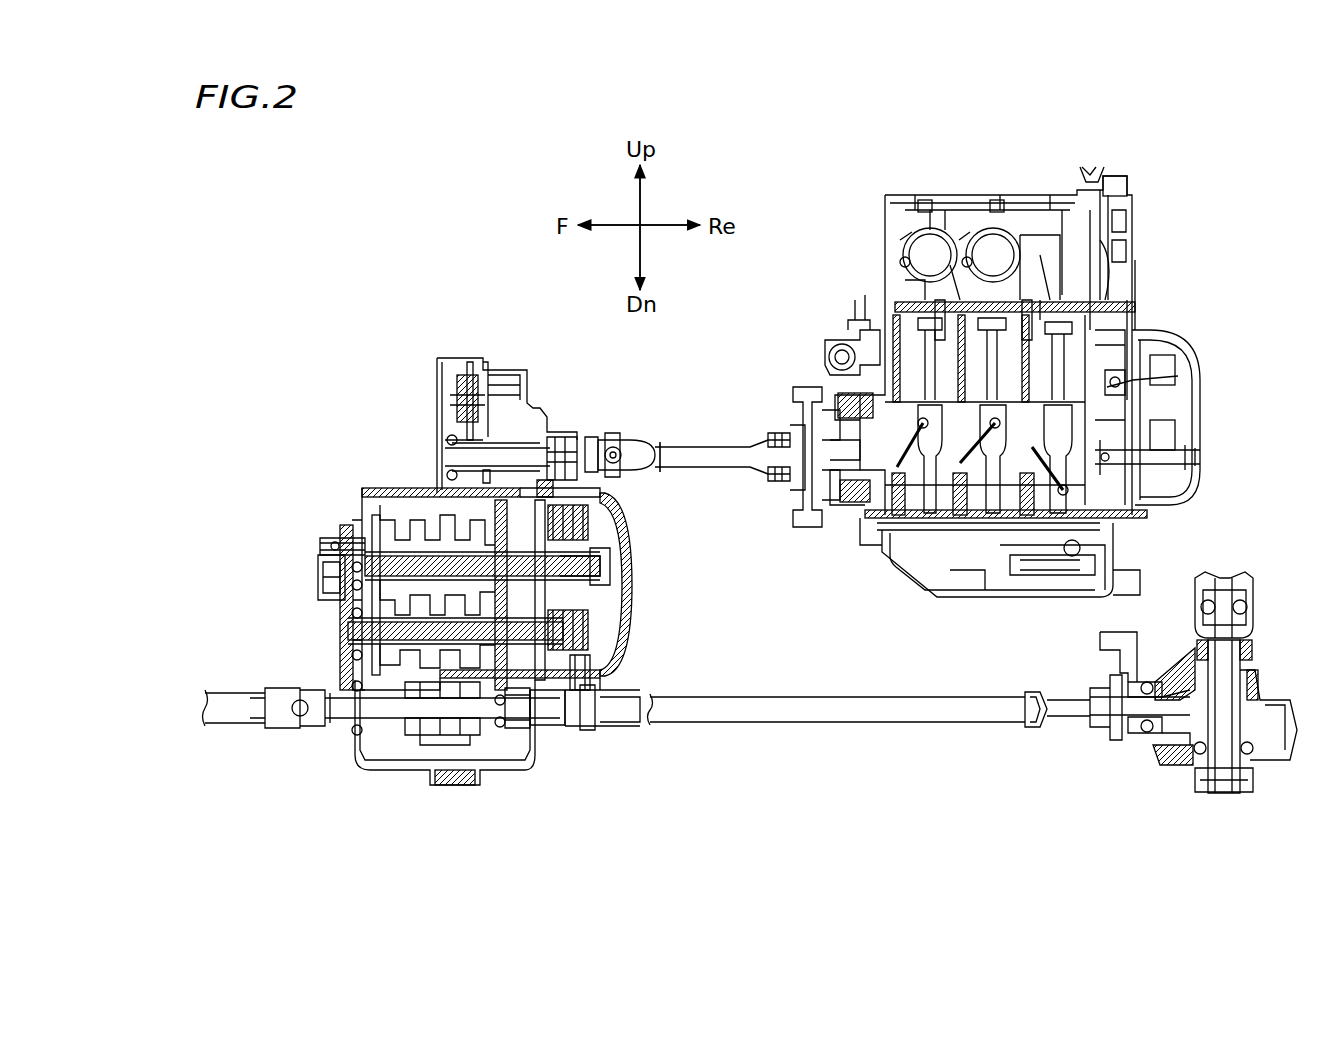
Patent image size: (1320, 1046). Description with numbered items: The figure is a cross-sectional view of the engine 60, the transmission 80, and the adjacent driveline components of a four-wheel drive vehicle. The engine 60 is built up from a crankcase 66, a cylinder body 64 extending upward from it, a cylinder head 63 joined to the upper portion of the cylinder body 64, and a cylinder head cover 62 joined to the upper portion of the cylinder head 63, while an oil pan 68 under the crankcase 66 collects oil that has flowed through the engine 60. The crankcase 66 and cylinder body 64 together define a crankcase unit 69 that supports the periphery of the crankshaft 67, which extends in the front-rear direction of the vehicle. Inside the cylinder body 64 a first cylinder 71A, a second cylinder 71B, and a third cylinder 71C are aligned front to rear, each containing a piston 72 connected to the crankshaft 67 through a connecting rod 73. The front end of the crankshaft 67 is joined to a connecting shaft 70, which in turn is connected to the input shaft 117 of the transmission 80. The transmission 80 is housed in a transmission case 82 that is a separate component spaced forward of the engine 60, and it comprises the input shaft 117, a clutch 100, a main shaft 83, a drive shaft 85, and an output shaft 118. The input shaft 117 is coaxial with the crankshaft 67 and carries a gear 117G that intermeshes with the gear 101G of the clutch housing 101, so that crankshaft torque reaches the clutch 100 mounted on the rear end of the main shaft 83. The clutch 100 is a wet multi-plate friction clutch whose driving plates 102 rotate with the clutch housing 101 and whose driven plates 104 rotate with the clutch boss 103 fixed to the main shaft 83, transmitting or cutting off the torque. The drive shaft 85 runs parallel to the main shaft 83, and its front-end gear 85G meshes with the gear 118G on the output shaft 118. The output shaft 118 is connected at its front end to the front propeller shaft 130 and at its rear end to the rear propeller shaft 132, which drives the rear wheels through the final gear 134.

The engine 60 is at (857, 250).
The cylinder head cover 62 is at (1127, 182).
The cylinder head 63 is at (1130, 250).
The cylinder body 64 is at (1047, 340).
The crankcase 66 is at (1183, 427).
The crankshaft 67 is at (1200, 458).
The oil pan 68 is at (1153, 605).
The crankcase unit 69 is at (1259, 333).
The connecting shaft 70 is at (687, 443).
The first cylinder 71A is at (930, 302).
The second cylinder 71B is at (1025, 303).
The third cylinder 71C is at (1114, 178).
The piston 72 is at (913, 250).
The connecting rod 73 is at (876, 330).
The transmission 80 is at (378, 511).
The transmission case 82 is at (337, 607).
The main shaft 83 is at (470, 540).
The drive shaft 85 is at (343, 633).
The gear 85G is at (363, 527).
The clutch 100 is at (600, 573).
The clutch housing 101 is at (550, 690).
The gear 101G is at (522, 730).
The driving plates 102 is at (585, 640).
The clutch boss 103 is at (595, 600).
The driven plates 104 is at (590, 693).
The input shaft 117 is at (464, 378).
The gear 117G is at (531, 392).
The output shaft 118 is at (418, 713).
The gear 118G is at (373, 760).
The front propeller shaft 130 is at (232, 720).
The rear propeller shaft 132 is at (948, 705).
The final gear 134 is at (1163, 760).